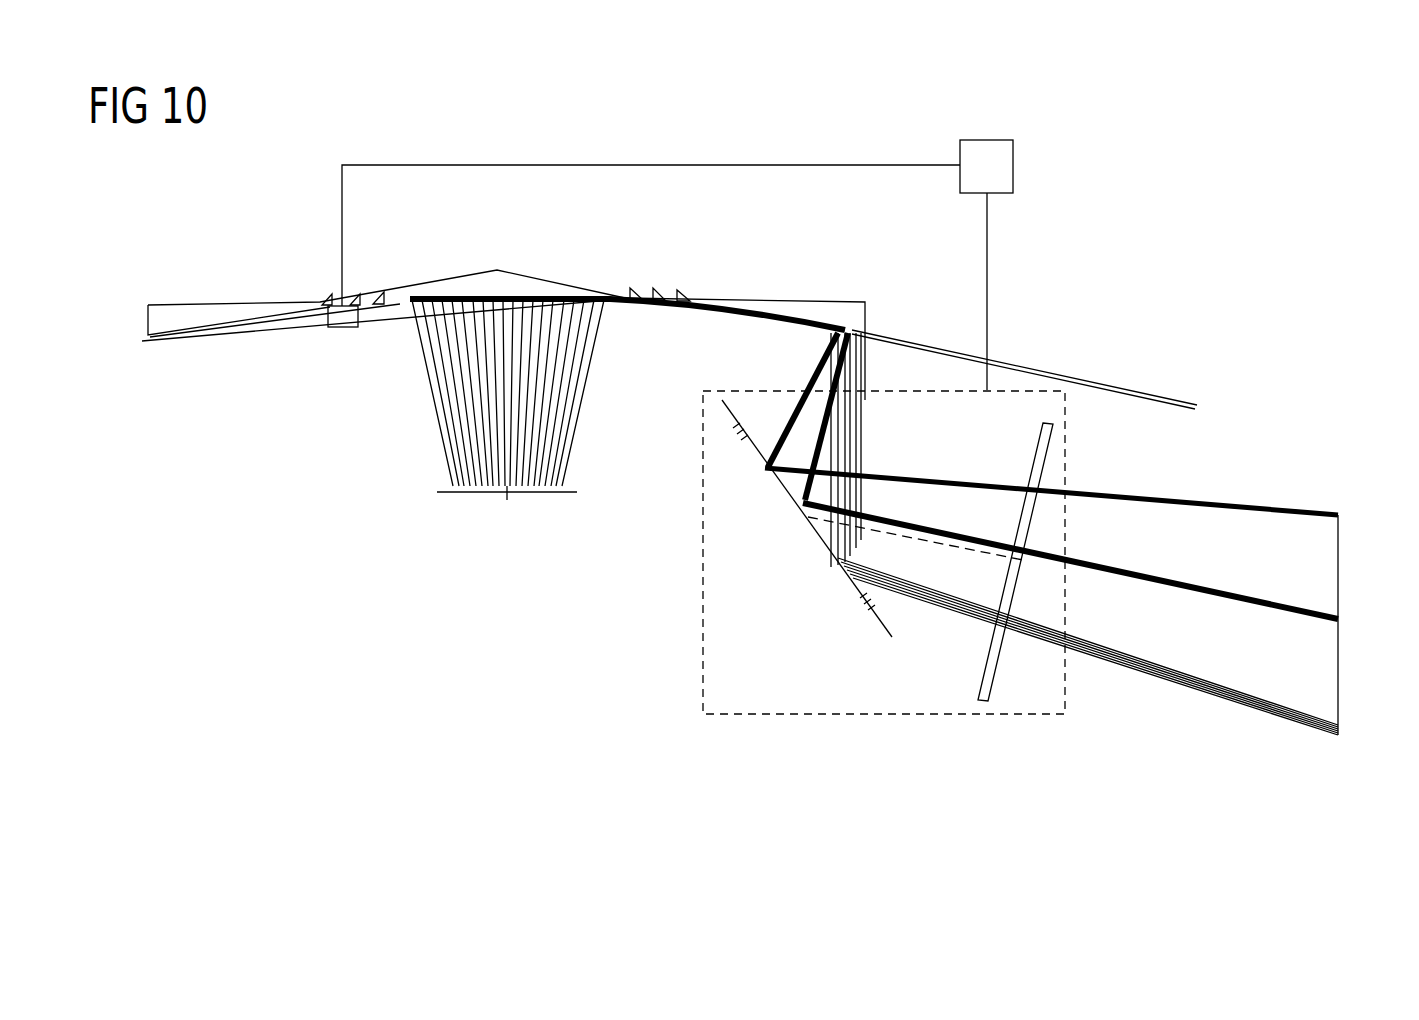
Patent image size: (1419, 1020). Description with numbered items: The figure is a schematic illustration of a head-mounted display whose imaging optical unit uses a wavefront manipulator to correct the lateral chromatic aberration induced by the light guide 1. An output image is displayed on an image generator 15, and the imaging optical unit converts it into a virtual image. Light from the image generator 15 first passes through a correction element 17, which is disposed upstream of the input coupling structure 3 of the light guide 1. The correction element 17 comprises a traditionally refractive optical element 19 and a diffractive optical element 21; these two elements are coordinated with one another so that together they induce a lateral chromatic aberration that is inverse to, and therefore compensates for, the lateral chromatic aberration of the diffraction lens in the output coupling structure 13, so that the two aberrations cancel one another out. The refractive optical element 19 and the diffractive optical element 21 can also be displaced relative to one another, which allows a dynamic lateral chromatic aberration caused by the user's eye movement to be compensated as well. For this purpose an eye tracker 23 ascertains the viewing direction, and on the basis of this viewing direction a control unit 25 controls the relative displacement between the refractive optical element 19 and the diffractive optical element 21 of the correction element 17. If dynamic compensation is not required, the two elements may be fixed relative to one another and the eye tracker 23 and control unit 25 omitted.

The light guide 1 is at (574, 264).
The input coupling structure 3 is at (850, 330).
The output coupling structure 13 is at (577, 313).
The image generator 15 is at (1338, 572).
The correction element 17 is at (895, 714).
The refractive optical element 19 is at (1058, 456).
The diffractive optical element 21 is at (808, 530).
The eye tracker 23 is at (345, 329).
The control unit 25 is at (1013, 165).